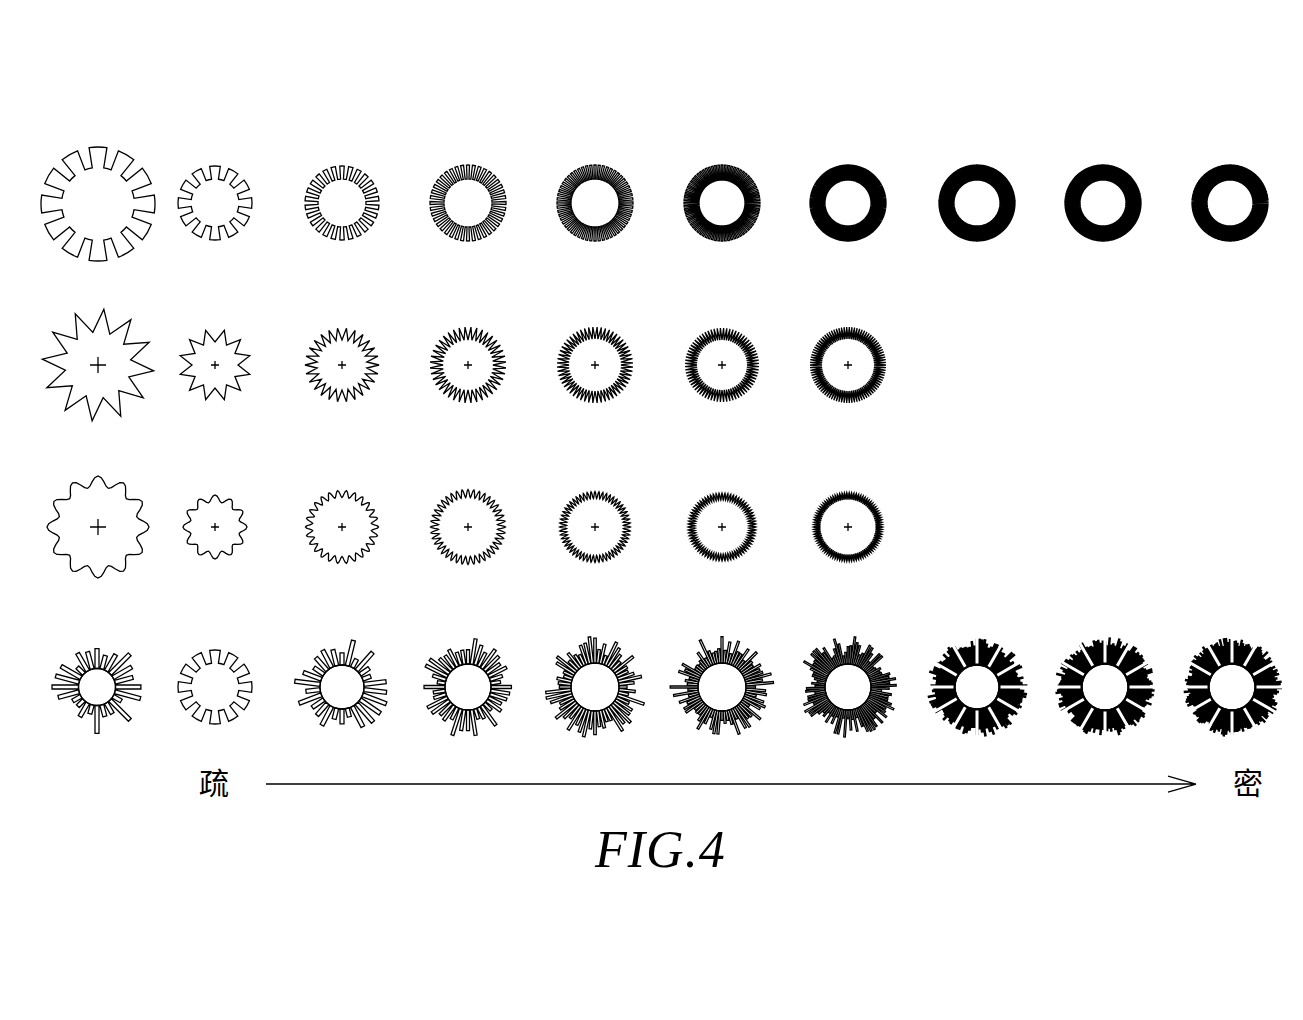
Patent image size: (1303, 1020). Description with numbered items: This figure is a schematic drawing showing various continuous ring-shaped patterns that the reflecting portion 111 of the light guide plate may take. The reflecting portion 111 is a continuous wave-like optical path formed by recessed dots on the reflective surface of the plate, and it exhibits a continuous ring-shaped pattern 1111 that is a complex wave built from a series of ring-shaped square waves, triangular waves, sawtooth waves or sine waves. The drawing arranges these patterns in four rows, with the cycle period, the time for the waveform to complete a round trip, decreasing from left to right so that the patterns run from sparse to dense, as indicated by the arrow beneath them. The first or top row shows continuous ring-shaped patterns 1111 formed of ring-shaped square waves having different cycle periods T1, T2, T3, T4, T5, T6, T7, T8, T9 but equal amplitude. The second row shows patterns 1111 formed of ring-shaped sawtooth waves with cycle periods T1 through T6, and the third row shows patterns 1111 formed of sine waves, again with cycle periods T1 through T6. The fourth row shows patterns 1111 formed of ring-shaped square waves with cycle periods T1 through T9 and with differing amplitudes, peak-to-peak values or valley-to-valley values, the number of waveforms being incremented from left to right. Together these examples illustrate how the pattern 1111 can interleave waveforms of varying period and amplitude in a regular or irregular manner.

The continuous wave-like reflecting portion 111 is at (89, 141).
The continuous ring-shaped pattern 1111 is at (127, 160).
The cycle period T1 is at (215, 408).
The cycle period T2 is at (341, 410).
The cycle period T3 is at (467, 414).
The cycle period T4 is at (595, 415).
The cycle period T5 is at (721, 413).
The cycle period T6 is at (850, 415).
The cycle period T7 is at (977, 416).
The cycle period T8 is at (1105, 416).
The cycle period T9 is at (1232, 416).